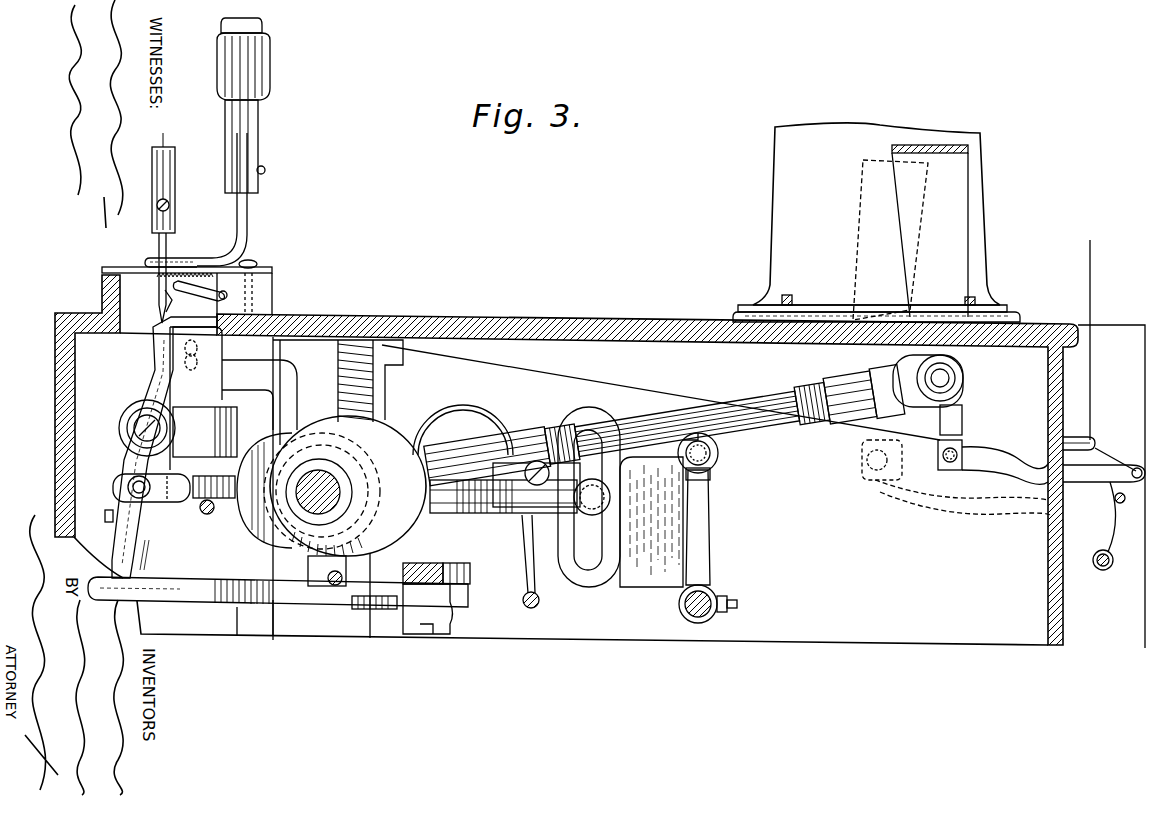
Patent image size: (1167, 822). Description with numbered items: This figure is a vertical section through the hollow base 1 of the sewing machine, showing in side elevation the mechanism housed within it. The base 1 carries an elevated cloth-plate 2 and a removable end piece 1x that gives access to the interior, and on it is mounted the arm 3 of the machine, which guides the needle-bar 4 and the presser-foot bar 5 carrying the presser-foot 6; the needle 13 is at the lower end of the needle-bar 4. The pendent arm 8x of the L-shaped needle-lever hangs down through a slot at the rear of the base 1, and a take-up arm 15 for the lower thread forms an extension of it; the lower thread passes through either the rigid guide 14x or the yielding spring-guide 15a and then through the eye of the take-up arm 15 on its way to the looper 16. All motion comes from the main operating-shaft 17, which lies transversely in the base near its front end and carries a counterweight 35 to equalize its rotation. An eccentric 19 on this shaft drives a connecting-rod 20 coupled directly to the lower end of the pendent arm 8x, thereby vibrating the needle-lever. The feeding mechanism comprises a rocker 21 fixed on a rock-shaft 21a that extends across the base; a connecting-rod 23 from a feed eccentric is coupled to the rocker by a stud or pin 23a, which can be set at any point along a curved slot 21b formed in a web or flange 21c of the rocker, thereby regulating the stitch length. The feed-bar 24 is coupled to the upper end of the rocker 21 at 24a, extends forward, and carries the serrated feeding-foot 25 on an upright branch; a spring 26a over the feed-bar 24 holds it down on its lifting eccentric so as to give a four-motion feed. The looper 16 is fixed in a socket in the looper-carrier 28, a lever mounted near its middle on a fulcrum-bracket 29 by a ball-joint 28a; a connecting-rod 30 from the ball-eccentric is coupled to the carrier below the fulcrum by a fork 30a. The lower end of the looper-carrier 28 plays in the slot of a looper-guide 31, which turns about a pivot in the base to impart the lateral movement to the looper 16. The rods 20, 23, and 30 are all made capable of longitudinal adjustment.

The base 1 is at (625, 322).
The removable end piece 1x is at (55, 455).
The cloth-plate 2 is at (270, 273).
The arm 3 is at (876, 222).
The needle-bar 4 is at (175, 185).
The presser-foot bar 5 is at (259, 126).
The presser-foot 6 is at (201, 258).
The pendent arm 8x is at (910, 232).
The needle 13 is at (156, 247).
The rigid guide 14x is at (1085, 429).
The take-up arm 15 is at (1128, 465).
The yielding spring-guide 15a is at (1110, 530).
The looper 16 is at (228, 294).
The main operating-shaft 17 is at (311, 571).
The eccentric 19 is at (418, 531).
The connecting-rod 20 is at (694, 411).
The rocker 21 is at (716, 535).
The rock-shaft 21a is at (682, 612).
The curved slot 21b is at (583, 565).
The web or flange 21c is at (651, 522).
The connecting-rod 23 is at (476, 518).
The coupling stud or pin 23a is at (575, 530).
The feed-bar 24 is at (455, 436).
The coupling point 24a is at (720, 456).
The serrated feeding-foot 25 is at (160, 285).
The spring 26a is at (340, 353).
The looper-carrier 28 is at (127, 464).
The ball-joint 28a is at (125, 416).
The fulcrum-bracket 29 is at (205, 432).
The connecting-rod 30 is at (214, 483).
The fork 30a is at (158, 505).
The looper-guide 31 is at (220, 580).
The counterweight 35 is at (262, 440).